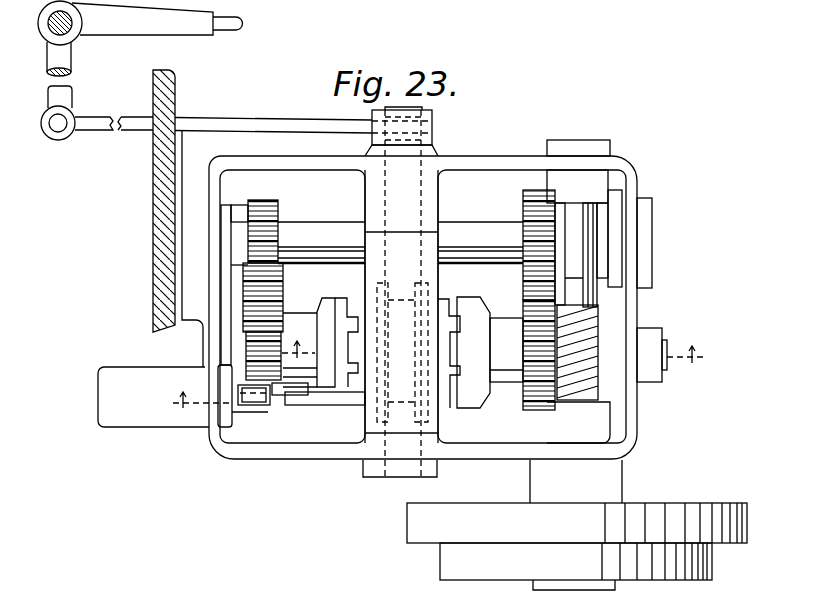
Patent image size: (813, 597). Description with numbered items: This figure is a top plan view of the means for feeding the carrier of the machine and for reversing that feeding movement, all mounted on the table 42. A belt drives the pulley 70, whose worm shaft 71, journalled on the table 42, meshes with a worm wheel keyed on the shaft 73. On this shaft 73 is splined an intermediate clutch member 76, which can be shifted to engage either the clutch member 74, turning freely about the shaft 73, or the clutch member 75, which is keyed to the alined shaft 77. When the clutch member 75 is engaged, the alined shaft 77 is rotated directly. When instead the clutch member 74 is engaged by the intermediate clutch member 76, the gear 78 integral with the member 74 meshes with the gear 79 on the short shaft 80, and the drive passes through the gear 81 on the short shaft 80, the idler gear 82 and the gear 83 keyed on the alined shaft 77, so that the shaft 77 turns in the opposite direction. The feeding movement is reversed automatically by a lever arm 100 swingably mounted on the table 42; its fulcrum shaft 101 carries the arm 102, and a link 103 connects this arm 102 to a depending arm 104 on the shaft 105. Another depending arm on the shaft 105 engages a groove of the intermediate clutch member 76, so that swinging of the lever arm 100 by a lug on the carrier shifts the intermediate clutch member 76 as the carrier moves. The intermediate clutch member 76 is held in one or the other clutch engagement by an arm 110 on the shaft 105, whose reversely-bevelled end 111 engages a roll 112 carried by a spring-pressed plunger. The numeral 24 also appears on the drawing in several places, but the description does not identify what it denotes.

The lever arm 100 is at (200, 28).
The fulcrum shaft 101 is at (52, 28).
The arm 102 is at (72, 60).
The link 103 is at (133, 128).
The depending arm 104 is at (434, 133).
The shaft 105 is at (421, 190).
The table 42 is at (153, 218).
The gear 81 is at (280, 205).
The idler gear 82 is at (282, 292).
The gear 83 is at (249, 349).
The short shaft 80 is at (481, 229).
The gear 79 is at (528, 199).
The gear 78 is at (529, 405).
The worm shaft 71 is at (598, 316).
The clutch member 75 is at (322, 298).
The intermediate clutch member 76 is at (352, 298).
The clutch member 74 is at (472, 306).
The shaft 73 is at (668, 346).
The arm 110 is at (318, 397).
The shaft axis 24 is at (439, 385).
The alined shaft 77 is at (198, 352).
The pulley 70 is at (456, 533).
The reversely-bevelled end 111 is at (199, 594).
The roll 112 is at (261, 594).